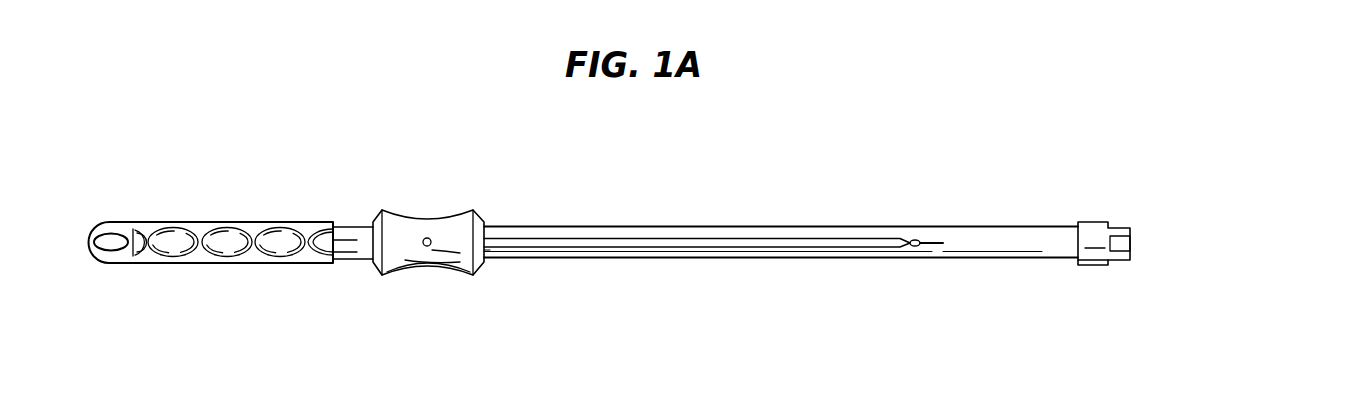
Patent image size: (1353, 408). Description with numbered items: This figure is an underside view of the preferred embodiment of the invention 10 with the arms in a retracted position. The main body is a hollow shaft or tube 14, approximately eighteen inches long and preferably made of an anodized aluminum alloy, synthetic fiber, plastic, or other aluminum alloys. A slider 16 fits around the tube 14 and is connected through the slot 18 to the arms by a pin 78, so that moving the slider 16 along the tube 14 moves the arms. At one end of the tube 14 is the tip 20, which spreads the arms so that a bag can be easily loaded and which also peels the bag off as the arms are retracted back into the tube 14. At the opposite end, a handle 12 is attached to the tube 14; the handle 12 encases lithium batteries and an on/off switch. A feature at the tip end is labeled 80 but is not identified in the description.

The invention 10 is at (742, 180).
The handle 12 is at (228, 223).
The hollow shaft or tube 14 is at (539, 237).
The slider 16 is at (422, 218).
The slot 18 is at (846, 238).
The tip 20 is at (1115, 262).
The pin 78 is at (425, 247).
The distal opening 80 is at (1123, 244).